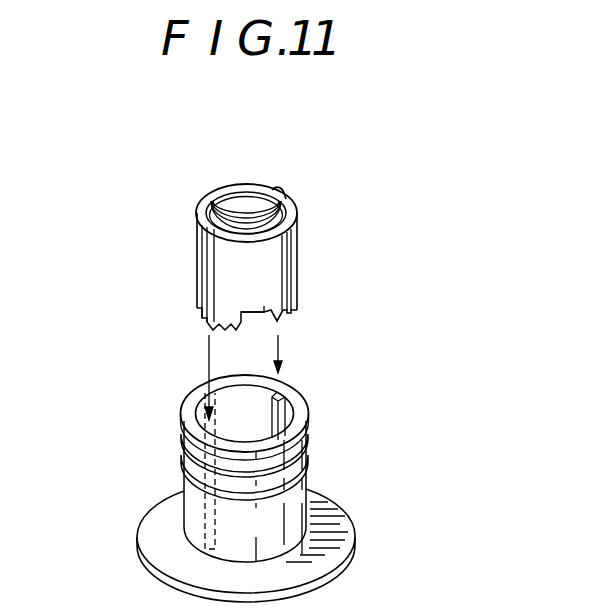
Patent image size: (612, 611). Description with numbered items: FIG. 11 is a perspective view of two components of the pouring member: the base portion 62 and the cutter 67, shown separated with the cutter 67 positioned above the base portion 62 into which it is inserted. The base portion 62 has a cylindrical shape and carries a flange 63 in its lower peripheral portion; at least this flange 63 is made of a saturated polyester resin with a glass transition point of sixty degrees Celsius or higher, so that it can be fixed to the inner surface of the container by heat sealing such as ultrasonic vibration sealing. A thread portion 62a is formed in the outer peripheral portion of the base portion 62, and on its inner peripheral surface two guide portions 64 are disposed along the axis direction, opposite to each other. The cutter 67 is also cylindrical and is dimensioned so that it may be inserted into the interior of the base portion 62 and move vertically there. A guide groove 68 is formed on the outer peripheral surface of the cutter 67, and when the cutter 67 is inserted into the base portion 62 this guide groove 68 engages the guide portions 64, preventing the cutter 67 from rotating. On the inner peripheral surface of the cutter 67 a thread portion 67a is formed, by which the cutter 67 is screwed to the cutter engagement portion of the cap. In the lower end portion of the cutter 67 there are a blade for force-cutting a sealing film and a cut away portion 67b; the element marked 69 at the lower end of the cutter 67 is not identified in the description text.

The base portion 62 is at (332, 465).
The thread portion 62a is at (311, 447).
The flange 63 is at (345, 536).
The guide portion 64 is at (288, 403).
The cutter 67 is at (299, 244).
The thread portion 67a is at (246, 198).
The cut away portion 67b is at (264, 307).
The guide groove 68 is at (285, 190).
The projection 69 is at (288, 309).